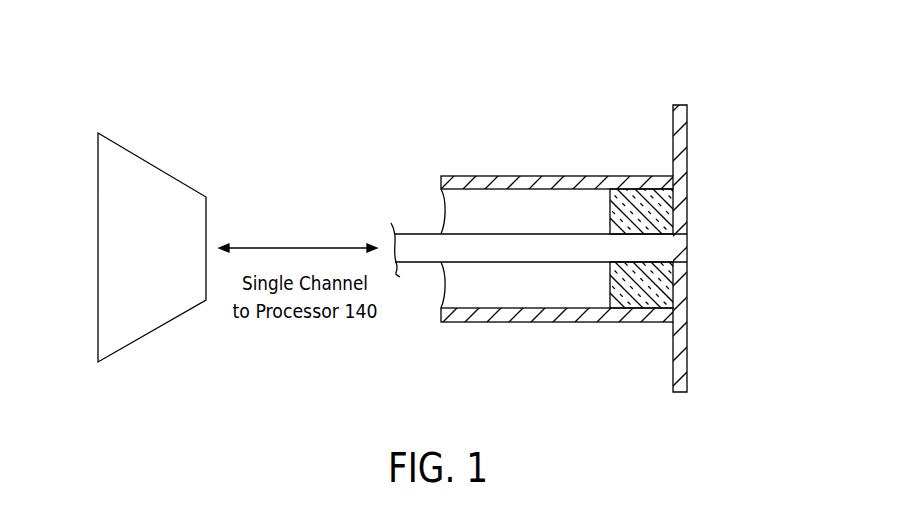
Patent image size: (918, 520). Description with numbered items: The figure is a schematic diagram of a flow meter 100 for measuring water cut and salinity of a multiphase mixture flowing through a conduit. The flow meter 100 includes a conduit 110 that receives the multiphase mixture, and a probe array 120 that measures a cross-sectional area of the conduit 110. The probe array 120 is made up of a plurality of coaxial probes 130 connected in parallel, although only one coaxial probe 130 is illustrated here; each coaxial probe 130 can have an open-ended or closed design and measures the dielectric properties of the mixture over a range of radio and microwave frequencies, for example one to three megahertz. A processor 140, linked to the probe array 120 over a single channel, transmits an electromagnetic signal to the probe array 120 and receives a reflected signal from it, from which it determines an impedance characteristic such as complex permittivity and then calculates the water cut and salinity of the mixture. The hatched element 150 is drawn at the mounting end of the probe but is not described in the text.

The flow meter 100 is at (669, 48).
The conduit 110 is at (497, 176).
The probe array 120 is at (498, 290).
The coaxial probe 130 is at (562, 250).
The processor 140 is at (163, 172).
The spacer 150 is at (665, 213).